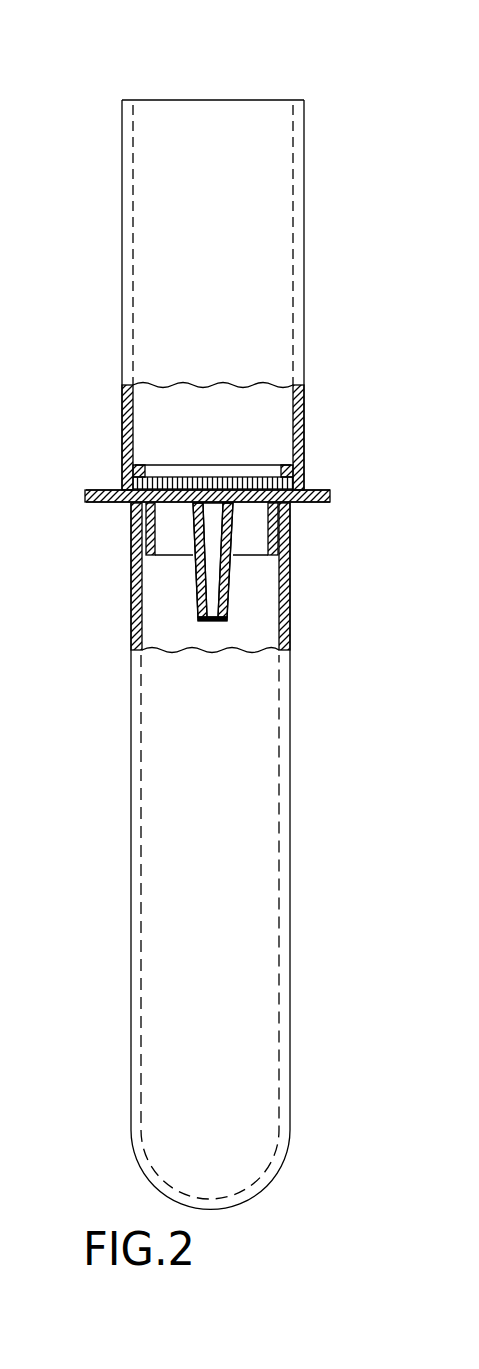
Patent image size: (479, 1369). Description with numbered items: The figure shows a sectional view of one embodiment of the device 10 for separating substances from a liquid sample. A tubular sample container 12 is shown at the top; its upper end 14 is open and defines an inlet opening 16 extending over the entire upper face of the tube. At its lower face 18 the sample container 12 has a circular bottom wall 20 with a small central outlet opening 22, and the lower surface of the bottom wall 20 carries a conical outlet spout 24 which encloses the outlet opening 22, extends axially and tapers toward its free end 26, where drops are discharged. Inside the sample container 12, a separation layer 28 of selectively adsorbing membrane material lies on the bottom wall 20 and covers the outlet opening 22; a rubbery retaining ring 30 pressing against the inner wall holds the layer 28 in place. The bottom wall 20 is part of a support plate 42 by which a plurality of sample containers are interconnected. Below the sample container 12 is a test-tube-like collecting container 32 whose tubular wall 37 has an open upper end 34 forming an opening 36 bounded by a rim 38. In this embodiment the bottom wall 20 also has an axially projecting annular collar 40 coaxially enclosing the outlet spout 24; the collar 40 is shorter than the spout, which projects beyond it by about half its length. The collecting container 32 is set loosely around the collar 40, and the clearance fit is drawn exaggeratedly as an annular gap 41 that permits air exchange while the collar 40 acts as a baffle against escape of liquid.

The device 10 is at (320, 468).
The sample container 12 is at (315, 402).
The upper end 14 is at (298, 90).
The inlet opening 16 is at (222, 108).
The lower face 18 is at (122, 508).
The bottom wall 20 is at (150, 570).
The outlet opening 22 is at (213, 476).
The outlet spout 24 is at (196, 580).
The free end 26 is at (200, 632).
The separation layer 28 is at (258, 478).
The retaining ring 30 is at (143, 466).
The collecting container 32 is at (302, 818).
The upper end 34 is at (310, 526).
The opening 36 is at (283, 470).
The tubular wall 37 is at (138, 742).
The rim 38 is at (294, 507).
The annular collar 40 is at (272, 520).
The annular gap 41 is at (284, 596).
The support plate 42 is at (103, 488).